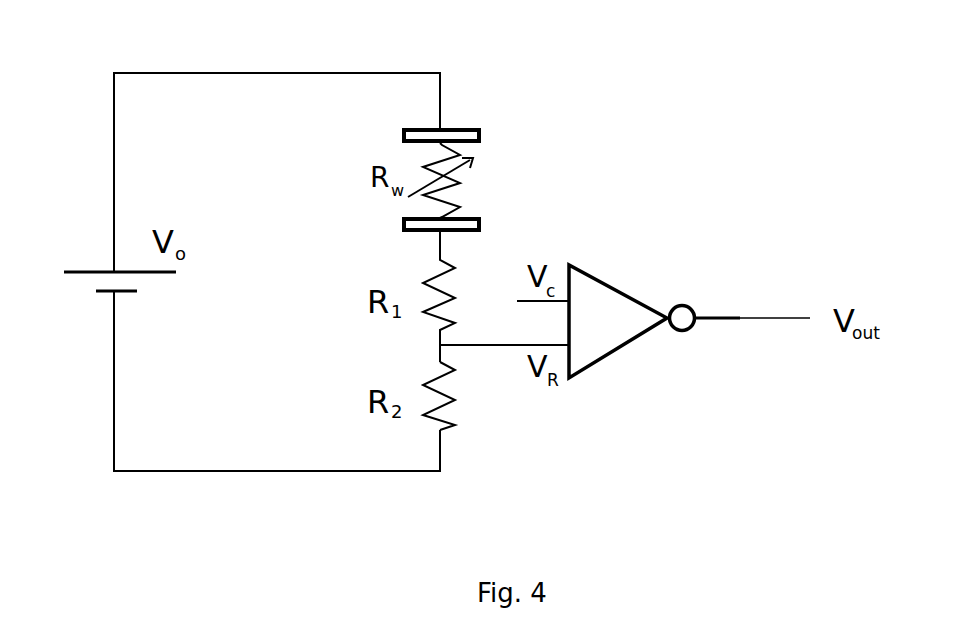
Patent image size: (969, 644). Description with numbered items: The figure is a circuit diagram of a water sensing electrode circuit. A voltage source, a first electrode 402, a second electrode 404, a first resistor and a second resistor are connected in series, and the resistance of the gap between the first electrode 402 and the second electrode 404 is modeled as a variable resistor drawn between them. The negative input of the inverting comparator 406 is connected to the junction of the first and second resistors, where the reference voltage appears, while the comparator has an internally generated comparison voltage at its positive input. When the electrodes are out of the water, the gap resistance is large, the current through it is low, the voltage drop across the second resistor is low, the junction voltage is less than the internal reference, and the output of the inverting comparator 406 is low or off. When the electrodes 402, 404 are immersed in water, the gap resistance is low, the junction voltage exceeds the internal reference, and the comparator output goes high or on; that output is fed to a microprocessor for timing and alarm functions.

The first electrode 402 is at (464, 138).
The second electrode 404 is at (464, 223).
The inverting comparator 406 is at (632, 344).